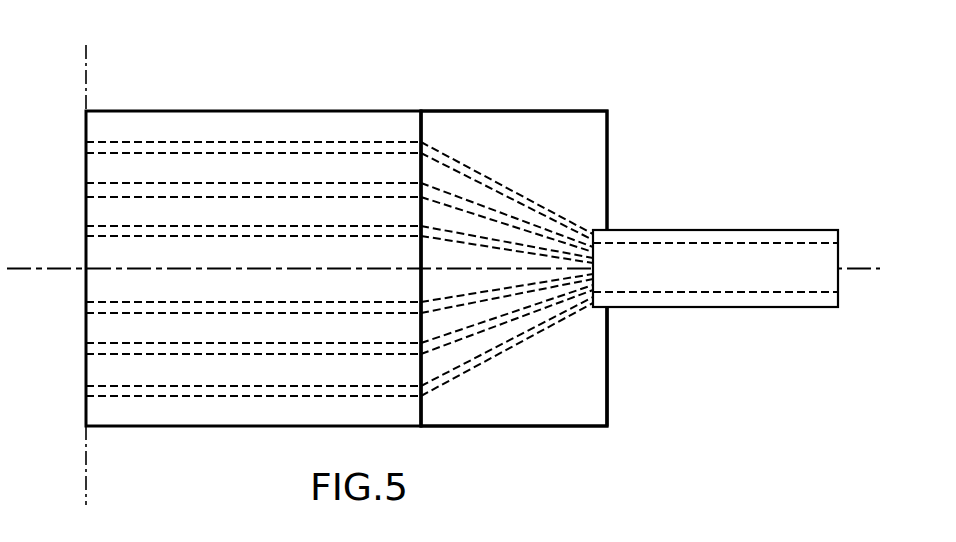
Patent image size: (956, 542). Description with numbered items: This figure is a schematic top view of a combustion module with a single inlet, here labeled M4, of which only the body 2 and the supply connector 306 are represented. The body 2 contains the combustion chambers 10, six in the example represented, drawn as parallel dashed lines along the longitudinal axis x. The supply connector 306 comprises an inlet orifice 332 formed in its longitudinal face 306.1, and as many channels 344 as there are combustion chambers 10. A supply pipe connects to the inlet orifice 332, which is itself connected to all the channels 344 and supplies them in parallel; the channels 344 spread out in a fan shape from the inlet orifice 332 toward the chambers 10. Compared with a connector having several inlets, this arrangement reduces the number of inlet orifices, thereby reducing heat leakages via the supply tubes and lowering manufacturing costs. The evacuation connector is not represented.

The body 2 is at (212, 99).
The combustion chambers 10 is at (188, 348).
The optical module M4 is at (361, 86).
The supply connector 306 is at (588, 101).
The channels 344 is at (522, 225).
The inlet orifice 332 is at (599, 307).
The longitudinal face 306.1 is at (607, 397).
The optical axis x is at (62, 268).